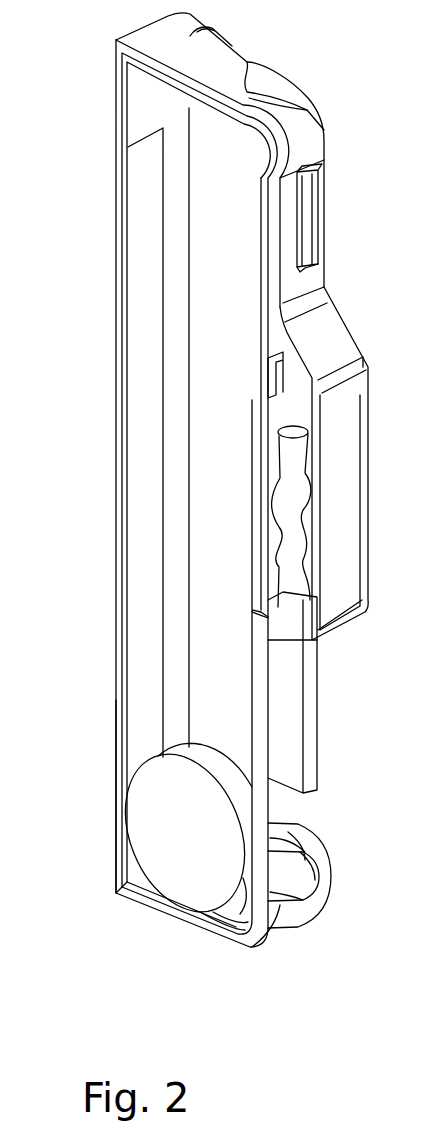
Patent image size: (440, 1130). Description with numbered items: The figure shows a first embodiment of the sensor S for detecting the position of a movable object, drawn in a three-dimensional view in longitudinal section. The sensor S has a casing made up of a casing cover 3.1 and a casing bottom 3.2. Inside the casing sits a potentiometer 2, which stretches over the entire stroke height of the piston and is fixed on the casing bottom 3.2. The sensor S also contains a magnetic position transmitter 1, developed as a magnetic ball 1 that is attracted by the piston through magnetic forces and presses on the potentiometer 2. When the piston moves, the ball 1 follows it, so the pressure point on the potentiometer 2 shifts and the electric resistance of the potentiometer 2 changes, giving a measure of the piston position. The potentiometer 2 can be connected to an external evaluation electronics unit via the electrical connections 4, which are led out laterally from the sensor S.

The sensor S is at (339, 35).
The magnetic position transmitter 1 is at (202, 888).
The potentiometer 2 is at (140, 675).
The casing cover 3.1 is at (245, 952).
The casing bottom 3.2 is at (118, 858).
The electrical connections 4 is at (317, 770).